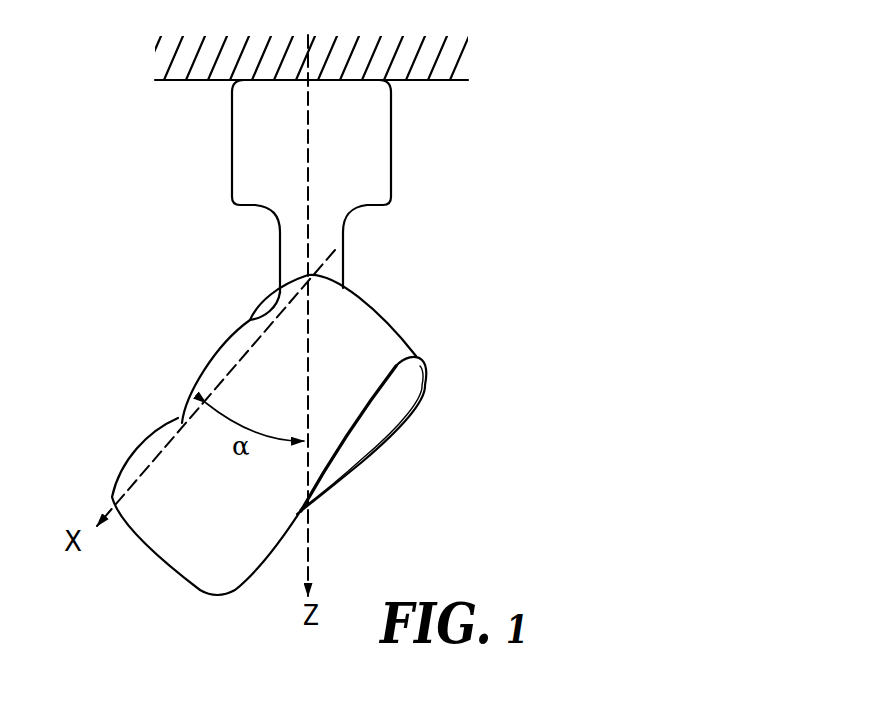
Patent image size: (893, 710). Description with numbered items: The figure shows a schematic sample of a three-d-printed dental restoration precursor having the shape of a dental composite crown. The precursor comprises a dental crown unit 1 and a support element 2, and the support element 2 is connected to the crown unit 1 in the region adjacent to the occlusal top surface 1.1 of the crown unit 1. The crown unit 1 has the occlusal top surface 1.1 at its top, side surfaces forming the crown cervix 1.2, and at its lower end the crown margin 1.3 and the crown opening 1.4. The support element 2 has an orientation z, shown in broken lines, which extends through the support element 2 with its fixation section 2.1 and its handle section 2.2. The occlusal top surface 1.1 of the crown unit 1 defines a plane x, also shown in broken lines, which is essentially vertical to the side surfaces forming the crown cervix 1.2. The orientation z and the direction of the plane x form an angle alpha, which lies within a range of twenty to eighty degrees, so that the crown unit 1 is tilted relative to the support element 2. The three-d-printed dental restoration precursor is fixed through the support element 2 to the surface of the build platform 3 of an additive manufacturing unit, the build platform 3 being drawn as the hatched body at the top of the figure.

The dental crown unit 1 is at (281, 460).
The occlusal top surface 1.1 is at (187, 348).
The crown cervix 1.2 is at (141, 578).
The crown margin 1.3 is at (437, 418).
The crown opening 1.4 is at (383, 438).
The support element 2 is at (320, 186).
The fixation section 2.1 is at (360, 258).
The handle section 2.2 is at (417, 134).
The build platform of an additive manufacturing unit 3 is at (150, 55).